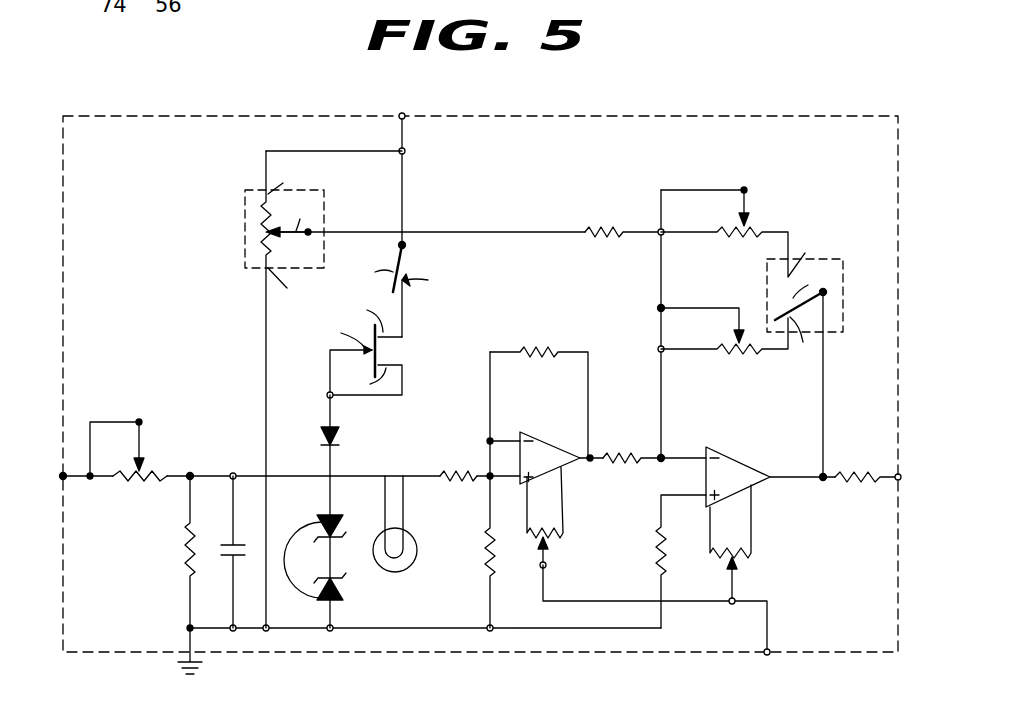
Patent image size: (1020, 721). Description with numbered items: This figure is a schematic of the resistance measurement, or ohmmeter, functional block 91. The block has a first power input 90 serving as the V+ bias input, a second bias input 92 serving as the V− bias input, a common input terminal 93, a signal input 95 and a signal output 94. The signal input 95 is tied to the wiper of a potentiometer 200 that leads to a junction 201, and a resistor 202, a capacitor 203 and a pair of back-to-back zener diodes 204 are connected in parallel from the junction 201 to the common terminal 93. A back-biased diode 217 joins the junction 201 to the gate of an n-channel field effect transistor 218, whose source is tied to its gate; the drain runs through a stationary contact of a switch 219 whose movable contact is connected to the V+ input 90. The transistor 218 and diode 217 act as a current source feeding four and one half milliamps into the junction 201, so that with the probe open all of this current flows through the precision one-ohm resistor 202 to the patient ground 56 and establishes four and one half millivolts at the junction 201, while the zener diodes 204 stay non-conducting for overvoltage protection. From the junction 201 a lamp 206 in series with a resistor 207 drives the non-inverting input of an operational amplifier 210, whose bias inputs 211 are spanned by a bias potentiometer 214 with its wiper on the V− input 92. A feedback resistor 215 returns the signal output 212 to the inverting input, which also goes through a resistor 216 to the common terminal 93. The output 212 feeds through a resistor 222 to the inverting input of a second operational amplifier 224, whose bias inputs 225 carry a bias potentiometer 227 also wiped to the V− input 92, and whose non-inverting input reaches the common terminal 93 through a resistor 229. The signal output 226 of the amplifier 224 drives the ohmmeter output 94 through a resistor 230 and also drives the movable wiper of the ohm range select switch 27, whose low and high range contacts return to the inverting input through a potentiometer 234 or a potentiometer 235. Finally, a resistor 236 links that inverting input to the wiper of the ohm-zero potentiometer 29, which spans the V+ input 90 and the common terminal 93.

The resistance measurement functional block 91 is at (586, 115).
The first power input 90 is at (405, 114).
The signal input 95 is at (60, 474).
The potentiometer 200 is at (150, 470).
The junction 201 is at (193, 473).
The resistor 202 is at (186, 560).
The capacitor 203 is at (228, 543).
The potentiometer 29 is at (245, 223).
The switch 219 is at (406, 263).
The n-channel field effect transistor 218 is at (396, 352).
The back-biased diode 217 is at (340, 440).
The back-to-back zener diodes 204 is at (310, 552).
The lamp 206 is at (400, 573).
The resistor 207 is at (463, 482).
The resistor 216 is at (488, 560).
The feedback resistor 215 is at (540, 351).
The operational amplifier 210 is at (536, 452).
The signal output 212 is at (578, 455).
The bias inputs 211 is at (524, 486).
The bias potentiometer 214 is at (536, 537).
The resistor 222 is at (618, 453).
The resistor 229 is at (658, 545).
The operational amplifier 224 is at (728, 453).
The signal output 226 is at (769, 472).
The bias inputs 225 is at (750, 485).
The bias potentiometer 227 is at (748, 556).
The resistor 230 is at (852, 471).
The signal output 94 is at (896, 481).
The second bias input 92 is at (774, 655).
The resistor 236 is at (596, 227).
The potentiometer 234 is at (753, 228).
The potentiometer 235 is at (733, 356).
The ohm range select switch 27 is at (843, 297).
The common input terminal 93 is at (195, 661).
The patient ground 56 is at (186, 668).